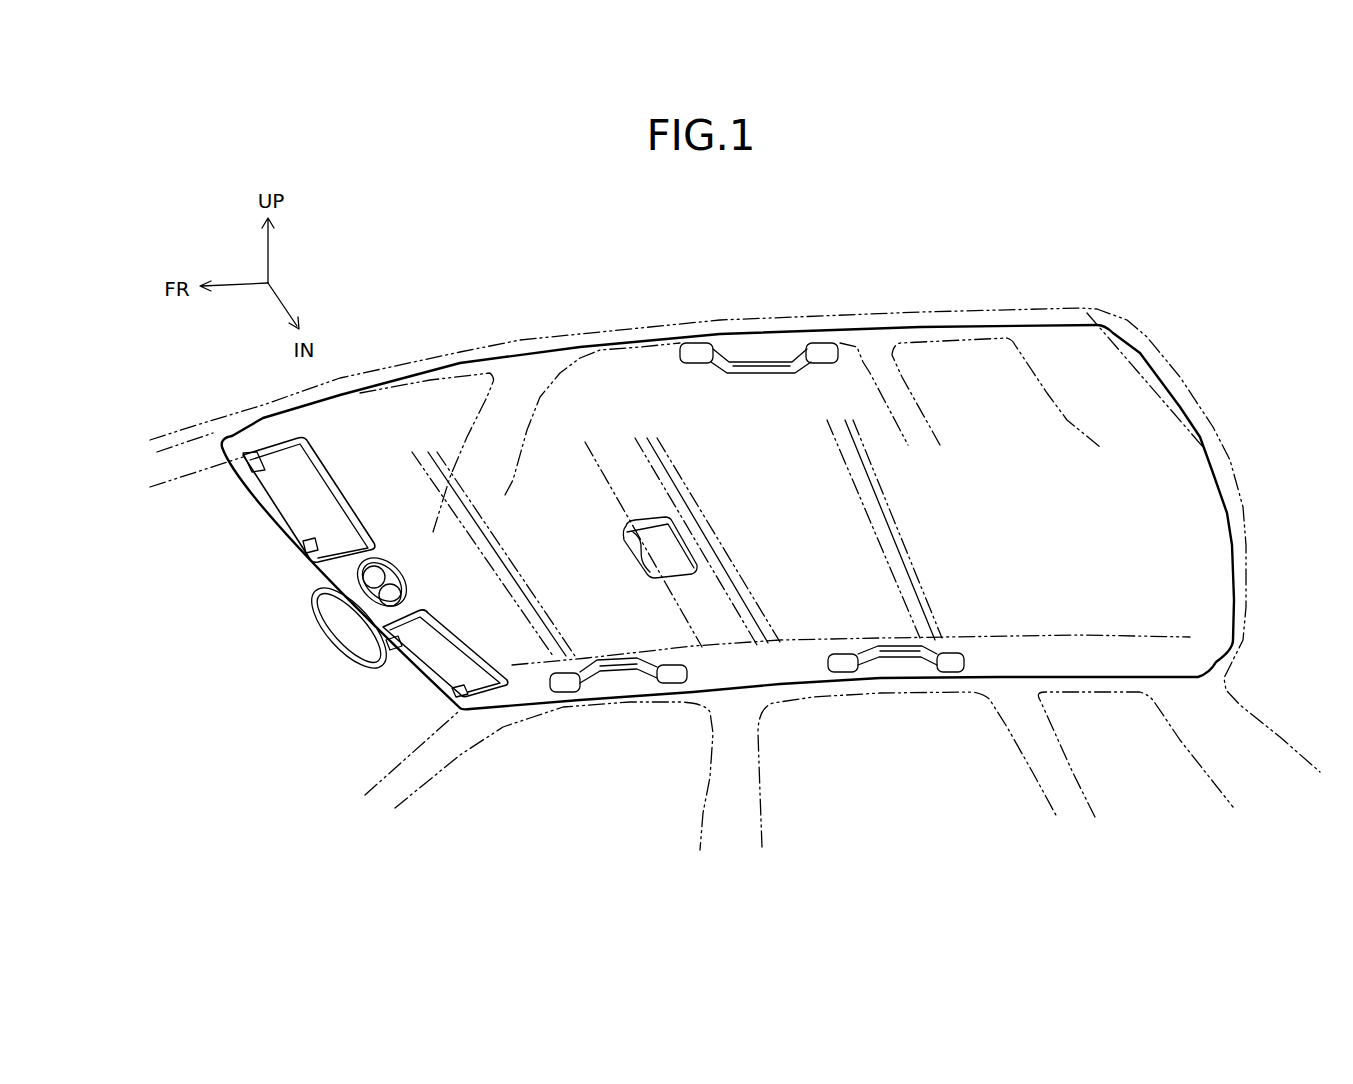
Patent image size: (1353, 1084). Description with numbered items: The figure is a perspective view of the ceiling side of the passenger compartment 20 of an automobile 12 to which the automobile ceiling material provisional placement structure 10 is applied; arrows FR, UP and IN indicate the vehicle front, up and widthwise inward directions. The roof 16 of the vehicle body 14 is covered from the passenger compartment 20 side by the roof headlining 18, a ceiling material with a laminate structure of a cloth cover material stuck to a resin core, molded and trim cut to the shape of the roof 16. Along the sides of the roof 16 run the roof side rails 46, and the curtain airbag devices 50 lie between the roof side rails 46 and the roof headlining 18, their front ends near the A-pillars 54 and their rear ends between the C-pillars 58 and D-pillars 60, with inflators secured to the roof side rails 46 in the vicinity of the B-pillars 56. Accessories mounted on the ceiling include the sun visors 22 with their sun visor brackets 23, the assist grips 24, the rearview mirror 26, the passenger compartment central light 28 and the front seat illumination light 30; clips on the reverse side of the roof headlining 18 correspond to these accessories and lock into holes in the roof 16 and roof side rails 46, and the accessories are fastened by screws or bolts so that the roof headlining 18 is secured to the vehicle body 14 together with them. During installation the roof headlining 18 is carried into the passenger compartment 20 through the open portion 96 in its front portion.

The automobile ceiling material provisional placement structure 10 is at (1059, 348).
The automobile 12 is at (581, 281).
The vehicle body 14 is at (496, 333).
The roof 16 is at (1002, 617).
The roof headlining 18 is at (812, 631).
The passenger compartment 20 is at (907, 780).
The sun visors 22 is at (290, 510).
The sun visor brackets 23 is at (245, 463).
The assist grips 24 is at (768, 350).
The rearview mirror 26 is at (326, 634).
The passenger compartment central light 28 is at (637, 562).
The front seat illumination light 30 is at (352, 565).
The roof side rails 46 is at (900, 313).
The curtain airbag devices 50 is at (665, 318).
The A-pillars 54 is at (173, 427).
The B-pillars 56 is at (545, 415).
The C-pillars 58 is at (868, 373).
The D-pillars 60 is at (1127, 358).
The open portion 96 is at (233, 636).